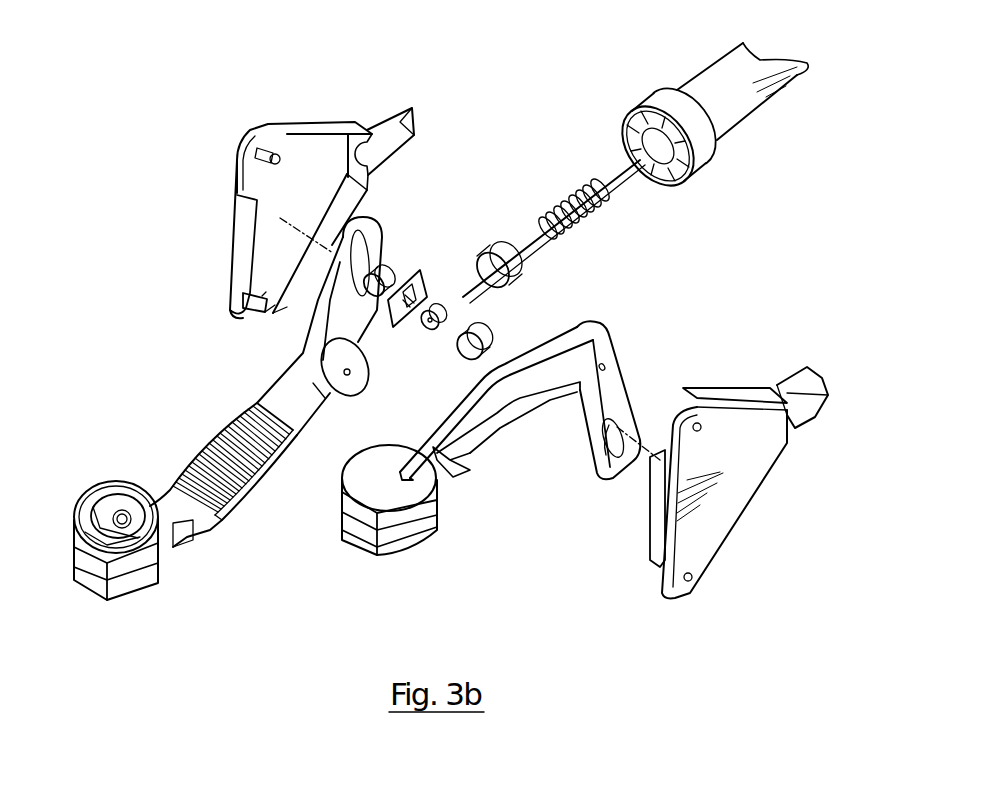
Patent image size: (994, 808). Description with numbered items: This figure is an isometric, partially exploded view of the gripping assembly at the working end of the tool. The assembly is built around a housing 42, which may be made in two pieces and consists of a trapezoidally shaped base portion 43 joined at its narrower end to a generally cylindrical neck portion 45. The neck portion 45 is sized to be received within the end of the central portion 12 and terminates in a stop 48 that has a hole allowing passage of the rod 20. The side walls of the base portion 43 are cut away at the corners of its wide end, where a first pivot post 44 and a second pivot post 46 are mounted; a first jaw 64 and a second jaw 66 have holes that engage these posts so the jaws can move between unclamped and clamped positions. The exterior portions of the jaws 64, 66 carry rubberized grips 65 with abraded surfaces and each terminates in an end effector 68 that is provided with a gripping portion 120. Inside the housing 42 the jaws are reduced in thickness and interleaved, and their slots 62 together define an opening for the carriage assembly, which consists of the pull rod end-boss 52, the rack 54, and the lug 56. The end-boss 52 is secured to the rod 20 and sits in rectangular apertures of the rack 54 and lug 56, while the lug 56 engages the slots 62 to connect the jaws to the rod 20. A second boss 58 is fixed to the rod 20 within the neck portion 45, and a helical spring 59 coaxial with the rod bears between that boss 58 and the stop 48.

The central portion 12 is at (797, 85).
The rod 20 is at (628, 170).
The housing 42 is at (250, 130).
The base portion 43 is at (756, 467).
The first pivot post 44 is at (240, 183).
The neck portion 45 is at (377, 127).
The second pivot post 46 is at (257, 317).
The stop 48 is at (417, 127).
The pull rod end-boss 52 is at (443, 317).
The rack 54 is at (428, 268).
The lug 56 is at (463, 347).
The second boss 58 is at (497, 247).
The helical spring 59 is at (587, 183).
The slots 62 is at (363, 253).
The first jaw 64 is at (628, 338).
The rubberized grips 65 is at (167, 483).
The second jaw 66 is at (183, 540).
The end effector 68 is at (120, 592).
The gripping portions 120 is at (78, 513).